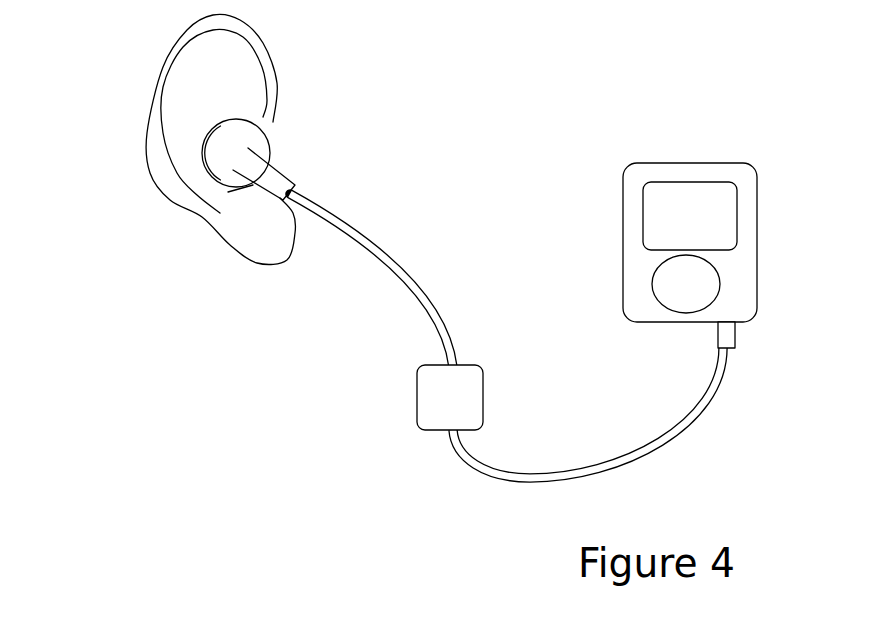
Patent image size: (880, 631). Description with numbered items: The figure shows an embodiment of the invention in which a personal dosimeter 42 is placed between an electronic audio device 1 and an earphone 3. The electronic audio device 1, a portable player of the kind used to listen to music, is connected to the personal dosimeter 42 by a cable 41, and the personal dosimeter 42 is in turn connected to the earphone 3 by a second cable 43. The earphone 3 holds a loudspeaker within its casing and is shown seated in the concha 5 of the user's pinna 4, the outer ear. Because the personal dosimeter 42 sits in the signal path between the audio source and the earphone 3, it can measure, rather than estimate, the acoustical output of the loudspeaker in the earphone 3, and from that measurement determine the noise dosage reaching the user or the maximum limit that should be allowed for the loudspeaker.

The electronic audio device 1 is at (657, 172).
The earphone 3 is at (280, 172).
The pinna 4 is at (218, 214).
The concha 5 is at (250, 103).
The cable 41 is at (527, 473).
The personal dosimeter 42 is at (443, 410).
The cable 43 is at (410, 278).